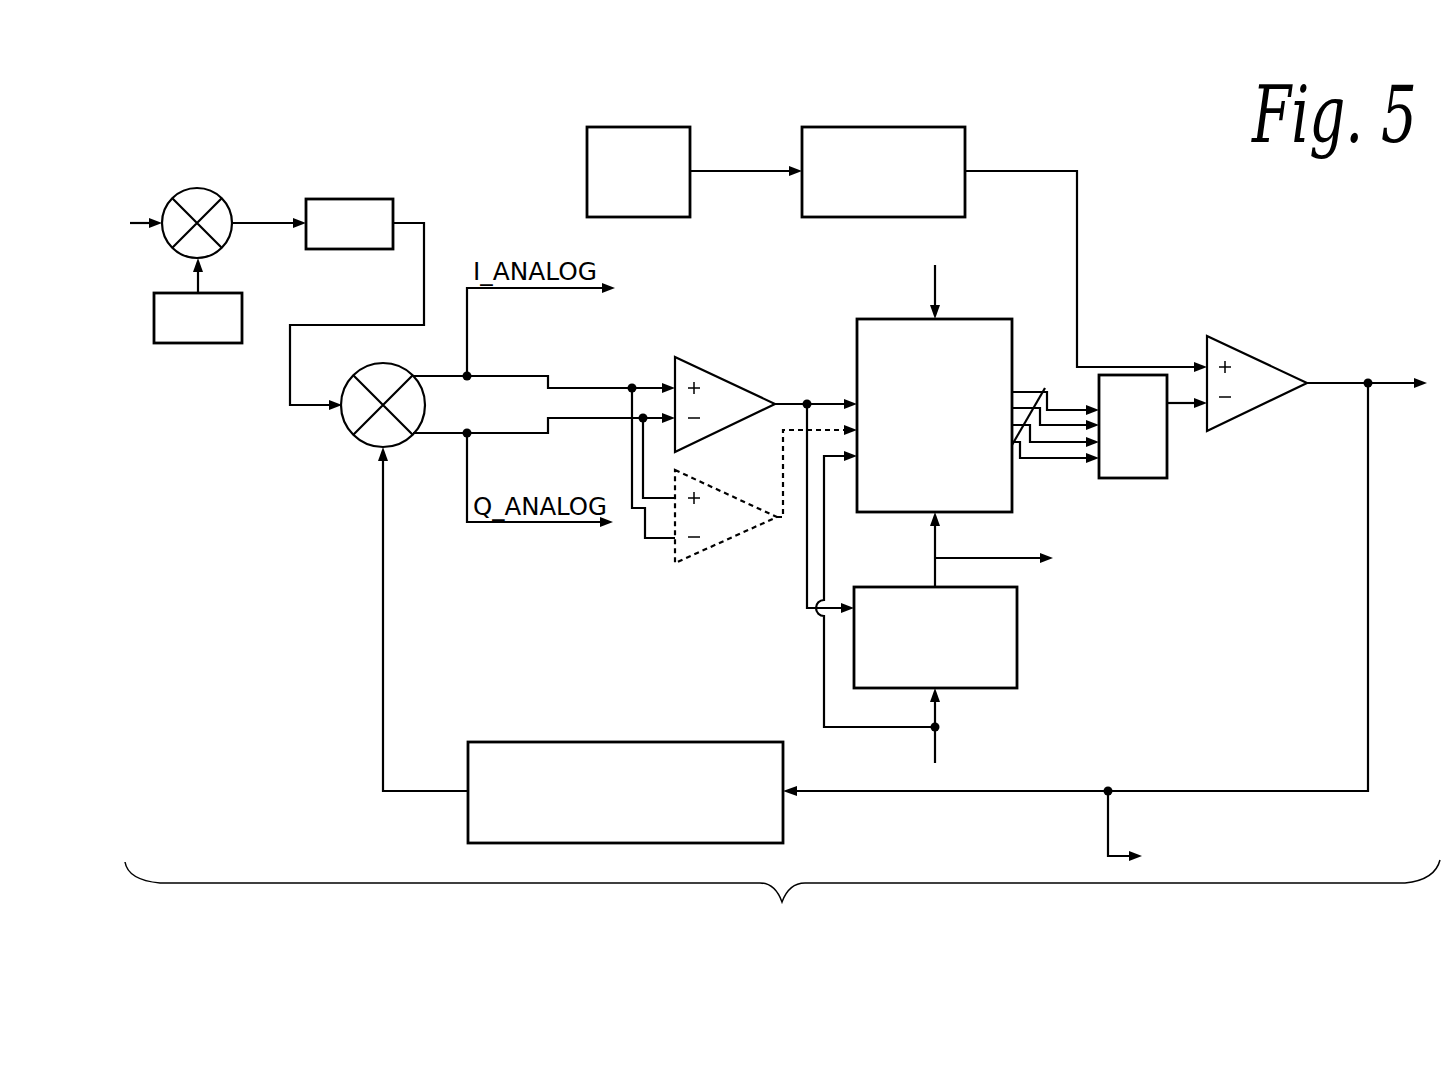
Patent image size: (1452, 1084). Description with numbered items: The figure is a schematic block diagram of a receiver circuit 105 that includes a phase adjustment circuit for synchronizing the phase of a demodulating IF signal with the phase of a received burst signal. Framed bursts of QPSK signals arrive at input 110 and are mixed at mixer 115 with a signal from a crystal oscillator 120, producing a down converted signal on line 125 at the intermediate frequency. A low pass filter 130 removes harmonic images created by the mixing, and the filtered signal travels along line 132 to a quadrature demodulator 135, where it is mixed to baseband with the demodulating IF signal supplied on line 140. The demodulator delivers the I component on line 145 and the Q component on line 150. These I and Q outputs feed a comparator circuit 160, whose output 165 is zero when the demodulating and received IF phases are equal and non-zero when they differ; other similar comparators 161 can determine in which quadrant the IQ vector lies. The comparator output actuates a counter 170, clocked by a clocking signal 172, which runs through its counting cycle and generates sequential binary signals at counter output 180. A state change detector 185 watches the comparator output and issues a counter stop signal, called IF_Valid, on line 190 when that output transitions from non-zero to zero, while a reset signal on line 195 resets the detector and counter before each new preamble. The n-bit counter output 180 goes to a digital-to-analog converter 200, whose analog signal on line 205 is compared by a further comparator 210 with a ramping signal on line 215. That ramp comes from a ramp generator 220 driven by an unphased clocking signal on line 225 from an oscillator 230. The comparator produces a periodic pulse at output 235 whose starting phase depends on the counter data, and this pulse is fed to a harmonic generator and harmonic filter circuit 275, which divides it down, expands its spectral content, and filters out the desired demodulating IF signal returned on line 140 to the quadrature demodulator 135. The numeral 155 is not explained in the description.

The receiver circuit 105 is at (782, 896).
The input 110 is at (142, 223).
The mixer 115 is at (200, 188).
The crystal oscillator 120 is at (195, 343).
The line 125 is at (253, 222).
The low pass filter 130 is at (347, 199).
The line 132 is at (424, 252).
The quadrature demodulator 135 is at (348, 430).
The line 140 is at (383, 605).
The line 145 is at (433, 372).
The line 150 is at (437, 437).
The clock recovery circuit 155 is at (1141, 583).
The comparator circuit 160 is at (711, 367).
The comparators 161 is at (722, 542).
The output 165 is at (790, 400).
The counter 170 is at (954, 383).
The clocking signal 172 is at (932, 292).
The counter output 180 is at (1033, 388).
The state change detector 185 is at (1017, 628).
The line 190 is at (935, 562).
The line 195 is at (935, 748).
The digital-to-analog converter 200 is at (1168, 457).
The line 205 is at (1183, 405).
The comparator 210 is at (1258, 355).
The line 215 is at (1128, 367).
The ramp generator 220 is at (843, 217).
The line 225 is at (742, 171).
The oscillator 230 is at (655, 217).
The output 235 is at (1310, 380).
The harmonic generator and harmonic filter circuit 275 is at (636, 835).